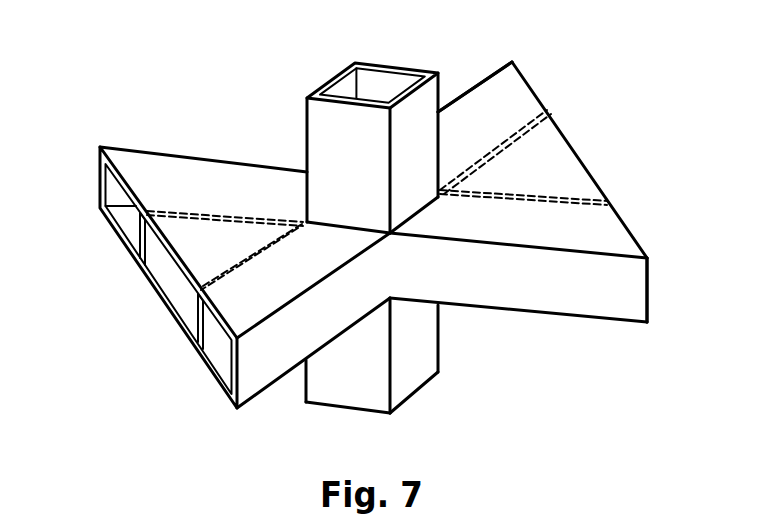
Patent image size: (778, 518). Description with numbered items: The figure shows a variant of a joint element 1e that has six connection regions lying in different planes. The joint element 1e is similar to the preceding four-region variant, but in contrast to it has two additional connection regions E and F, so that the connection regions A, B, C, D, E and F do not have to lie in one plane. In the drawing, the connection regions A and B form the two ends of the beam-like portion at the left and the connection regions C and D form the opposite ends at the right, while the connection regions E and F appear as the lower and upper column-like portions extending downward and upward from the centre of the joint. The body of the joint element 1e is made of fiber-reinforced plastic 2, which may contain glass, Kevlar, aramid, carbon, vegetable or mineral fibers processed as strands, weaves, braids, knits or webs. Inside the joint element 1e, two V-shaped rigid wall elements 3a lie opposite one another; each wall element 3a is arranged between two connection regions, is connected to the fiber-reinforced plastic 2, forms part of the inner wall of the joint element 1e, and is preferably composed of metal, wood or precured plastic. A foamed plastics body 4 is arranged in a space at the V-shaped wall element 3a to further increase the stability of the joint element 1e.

The joint element 1e is at (661, 102).
The fiber-reinforced plastic 2 is at (247, 180).
The wall element 3a is at (127, 248).
The foamed plastics body 4 is at (167, 277).
The connection region A is at (115, 195).
The connection region B is at (220, 347).
The connection region C is at (540, 80).
The connection region D is at (653, 282).
The connection region E is at (415, 395).
The connection region F is at (383, 83).